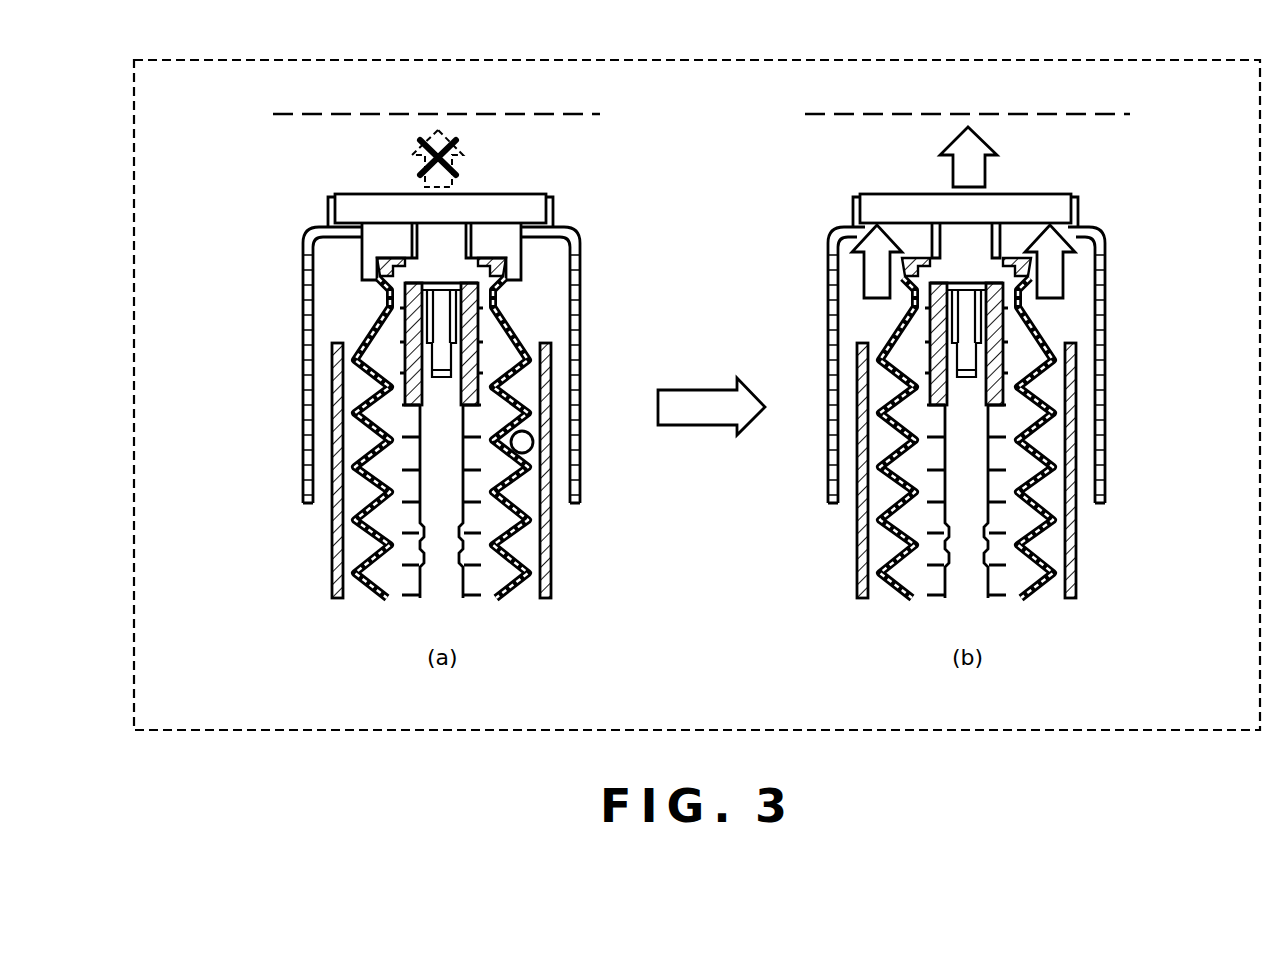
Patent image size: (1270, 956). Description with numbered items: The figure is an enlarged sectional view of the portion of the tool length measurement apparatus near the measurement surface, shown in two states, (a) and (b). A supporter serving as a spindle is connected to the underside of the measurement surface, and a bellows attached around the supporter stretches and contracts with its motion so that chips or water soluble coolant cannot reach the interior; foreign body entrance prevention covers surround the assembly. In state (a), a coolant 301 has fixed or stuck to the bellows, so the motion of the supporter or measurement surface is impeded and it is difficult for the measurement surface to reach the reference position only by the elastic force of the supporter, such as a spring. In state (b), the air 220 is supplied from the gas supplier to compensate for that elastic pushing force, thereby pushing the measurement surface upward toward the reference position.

The air 220 is at (965, 275).
The coolant 301 is at (526, 452).